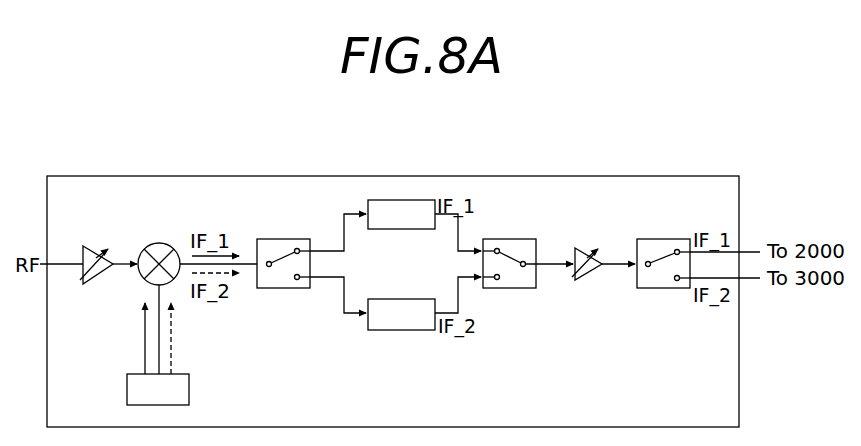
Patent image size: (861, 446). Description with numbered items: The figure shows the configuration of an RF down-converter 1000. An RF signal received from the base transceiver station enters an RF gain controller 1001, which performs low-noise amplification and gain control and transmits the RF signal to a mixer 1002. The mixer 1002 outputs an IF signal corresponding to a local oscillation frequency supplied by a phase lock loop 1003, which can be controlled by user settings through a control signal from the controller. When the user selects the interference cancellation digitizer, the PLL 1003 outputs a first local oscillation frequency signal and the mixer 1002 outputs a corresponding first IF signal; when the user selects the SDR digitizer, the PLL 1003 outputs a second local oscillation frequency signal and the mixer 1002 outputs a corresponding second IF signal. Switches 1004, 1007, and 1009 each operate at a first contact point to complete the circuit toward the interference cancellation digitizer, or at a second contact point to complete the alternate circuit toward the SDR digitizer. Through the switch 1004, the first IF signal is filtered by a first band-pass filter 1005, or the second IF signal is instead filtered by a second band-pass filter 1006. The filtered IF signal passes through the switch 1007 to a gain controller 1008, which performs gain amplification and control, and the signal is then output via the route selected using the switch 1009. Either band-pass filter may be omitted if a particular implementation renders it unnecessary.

The RF down-converter 1000 is at (461, 176).
The RF gain controller 1001 is at (91, 247).
The mixer 1002 is at (160, 243).
The phase lock loop (PLL) 1003 is at (189, 393).
The switch 1004 is at (282, 289).
The BPF_1 1005 is at (402, 200).
The BPF_2 1006 is at (402, 331).
The switch 1007 is at (510, 289).
The gain controller 1008 is at (589, 281).
The switch 1009 is at (663, 289).